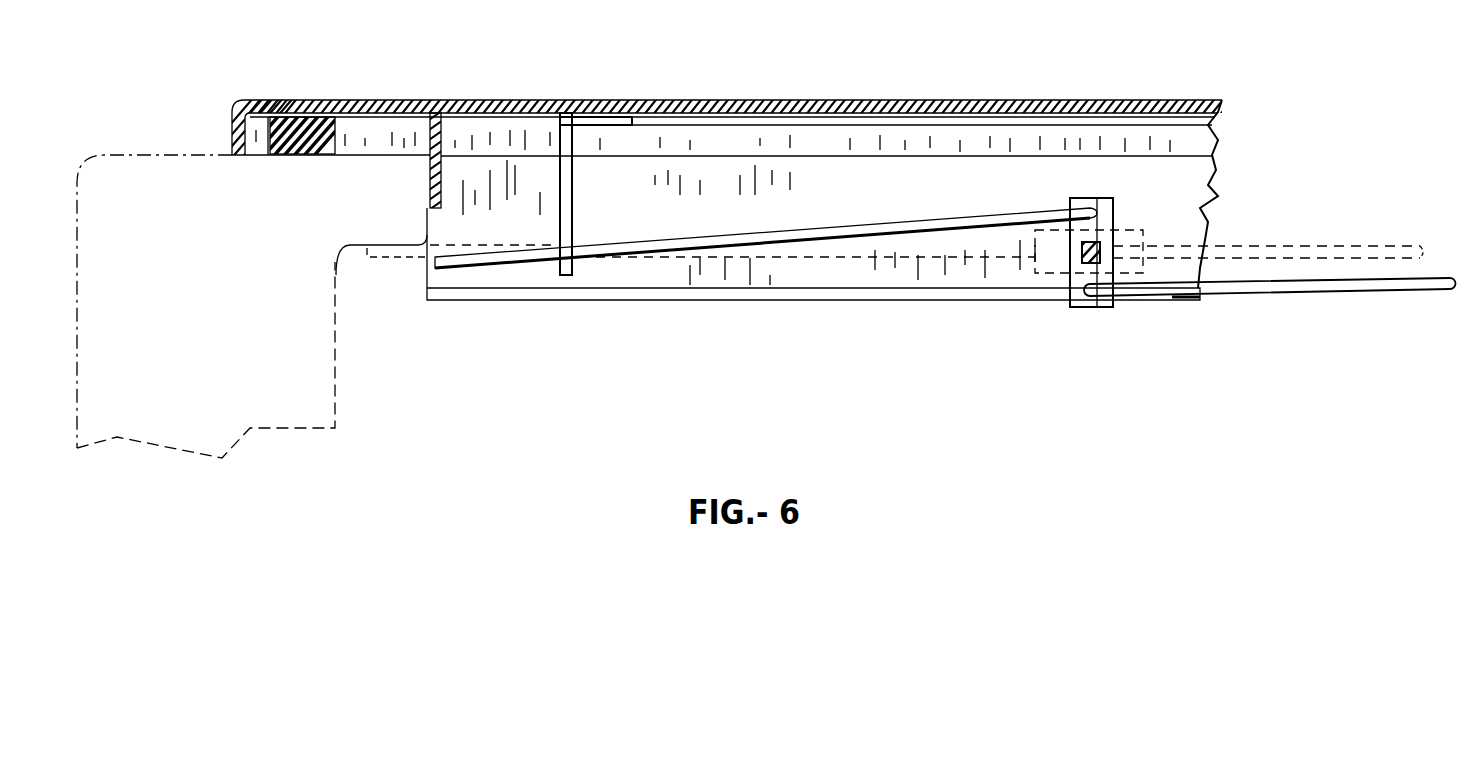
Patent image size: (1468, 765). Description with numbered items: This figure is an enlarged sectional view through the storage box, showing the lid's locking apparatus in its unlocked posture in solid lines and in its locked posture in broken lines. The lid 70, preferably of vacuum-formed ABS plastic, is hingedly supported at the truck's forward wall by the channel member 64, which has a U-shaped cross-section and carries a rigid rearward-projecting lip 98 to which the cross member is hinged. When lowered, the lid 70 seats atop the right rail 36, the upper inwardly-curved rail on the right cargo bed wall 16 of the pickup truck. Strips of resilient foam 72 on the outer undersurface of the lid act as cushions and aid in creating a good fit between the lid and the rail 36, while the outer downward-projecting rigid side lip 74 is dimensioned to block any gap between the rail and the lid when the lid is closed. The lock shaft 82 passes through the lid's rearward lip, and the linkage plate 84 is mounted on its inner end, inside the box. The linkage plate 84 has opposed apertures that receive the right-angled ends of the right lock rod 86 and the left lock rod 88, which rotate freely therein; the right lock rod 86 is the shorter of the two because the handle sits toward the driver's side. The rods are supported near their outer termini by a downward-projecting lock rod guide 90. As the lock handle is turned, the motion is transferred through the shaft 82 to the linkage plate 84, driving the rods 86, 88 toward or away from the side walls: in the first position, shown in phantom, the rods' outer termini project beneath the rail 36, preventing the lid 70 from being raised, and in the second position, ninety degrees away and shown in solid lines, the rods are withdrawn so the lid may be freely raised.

The right cargo bed wall 16 is at (305, 367).
The right rail 36 is at (183, 153).
The channel member 64 is at (842, 170).
The lid 70 is at (958, 102).
The strips of resilient foam 72 is at (340, 143).
The right side lip 74 is at (450, 131).
The lock shaft 82 is at (1083, 247).
The linkage plate 84 is at (1100, 198).
The right lock rod 86 is at (940, 215).
The left lock rod 88 is at (1245, 297).
The lock rod guide 90 is at (577, 220).
The rearward-projecting lip 98 is at (658, 300).